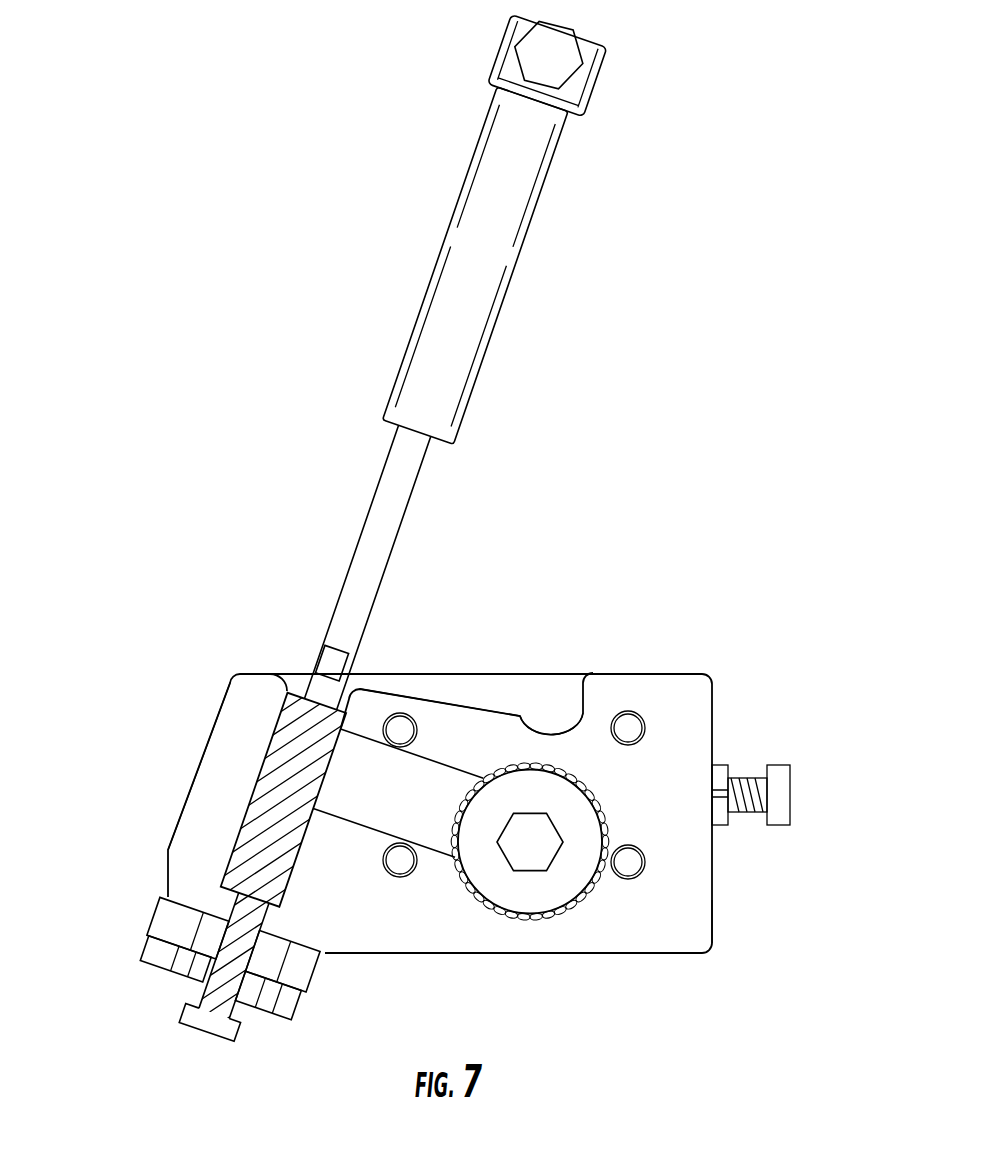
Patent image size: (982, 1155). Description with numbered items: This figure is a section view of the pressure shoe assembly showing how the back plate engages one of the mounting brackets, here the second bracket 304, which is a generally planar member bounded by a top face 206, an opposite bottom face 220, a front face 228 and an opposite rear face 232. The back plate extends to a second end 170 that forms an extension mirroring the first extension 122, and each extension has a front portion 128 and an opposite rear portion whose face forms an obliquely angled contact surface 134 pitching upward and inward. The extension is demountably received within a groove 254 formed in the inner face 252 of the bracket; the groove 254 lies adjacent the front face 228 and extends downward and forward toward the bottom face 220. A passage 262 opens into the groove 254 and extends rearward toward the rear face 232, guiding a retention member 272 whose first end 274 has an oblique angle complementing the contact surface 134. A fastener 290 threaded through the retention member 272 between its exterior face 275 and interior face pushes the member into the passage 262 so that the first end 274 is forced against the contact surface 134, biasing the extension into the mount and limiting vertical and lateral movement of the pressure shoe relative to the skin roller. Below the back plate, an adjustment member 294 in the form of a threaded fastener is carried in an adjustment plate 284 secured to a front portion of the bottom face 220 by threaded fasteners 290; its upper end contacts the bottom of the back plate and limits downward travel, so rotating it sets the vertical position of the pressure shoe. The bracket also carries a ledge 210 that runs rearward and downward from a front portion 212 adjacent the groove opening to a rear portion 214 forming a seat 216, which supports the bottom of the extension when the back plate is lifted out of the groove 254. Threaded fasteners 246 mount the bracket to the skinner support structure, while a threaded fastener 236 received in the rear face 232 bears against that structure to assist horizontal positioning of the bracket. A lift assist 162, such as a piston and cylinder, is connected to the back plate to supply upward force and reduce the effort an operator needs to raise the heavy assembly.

The first extension 122 is at (212, 846).
The front portion 128 is at (275, 724).
The contact surface 134 is at (333, 750).
The lift assist 162 is at (535, 172).
The second end 170 is at (268, 692).
The top face 206 is at (658, 668).
The ledge 210 is at (460, 648).
The front portion 212 is at (396, 673).
The rear portion 214 is at (488, 716).
The seat 216 is at (557, 713).
The bottom face 220 is at (652, 972).
The front face 228 is at (186, 788).
The rear face 232 is at (722, 704).
The threaded fastener 236 is at (785, 773).
The threaded fasteners 246 is at (632, 862).
The inner face 252 is at (693, 919).
The groove 254 is at (321, 898).
The passage 262 is at (441, 882).
The retention member 272 is at (470, 772).
The first end 274 is at (320, 790).
The exterior face 275 is at (416, 773).
The adjustment plate 284 is at (172, 924).
The fastener 290 is at (536, 850).
The adjustment member 294 is at (224, 1033).
The second bracket 304 is at (718, 972).